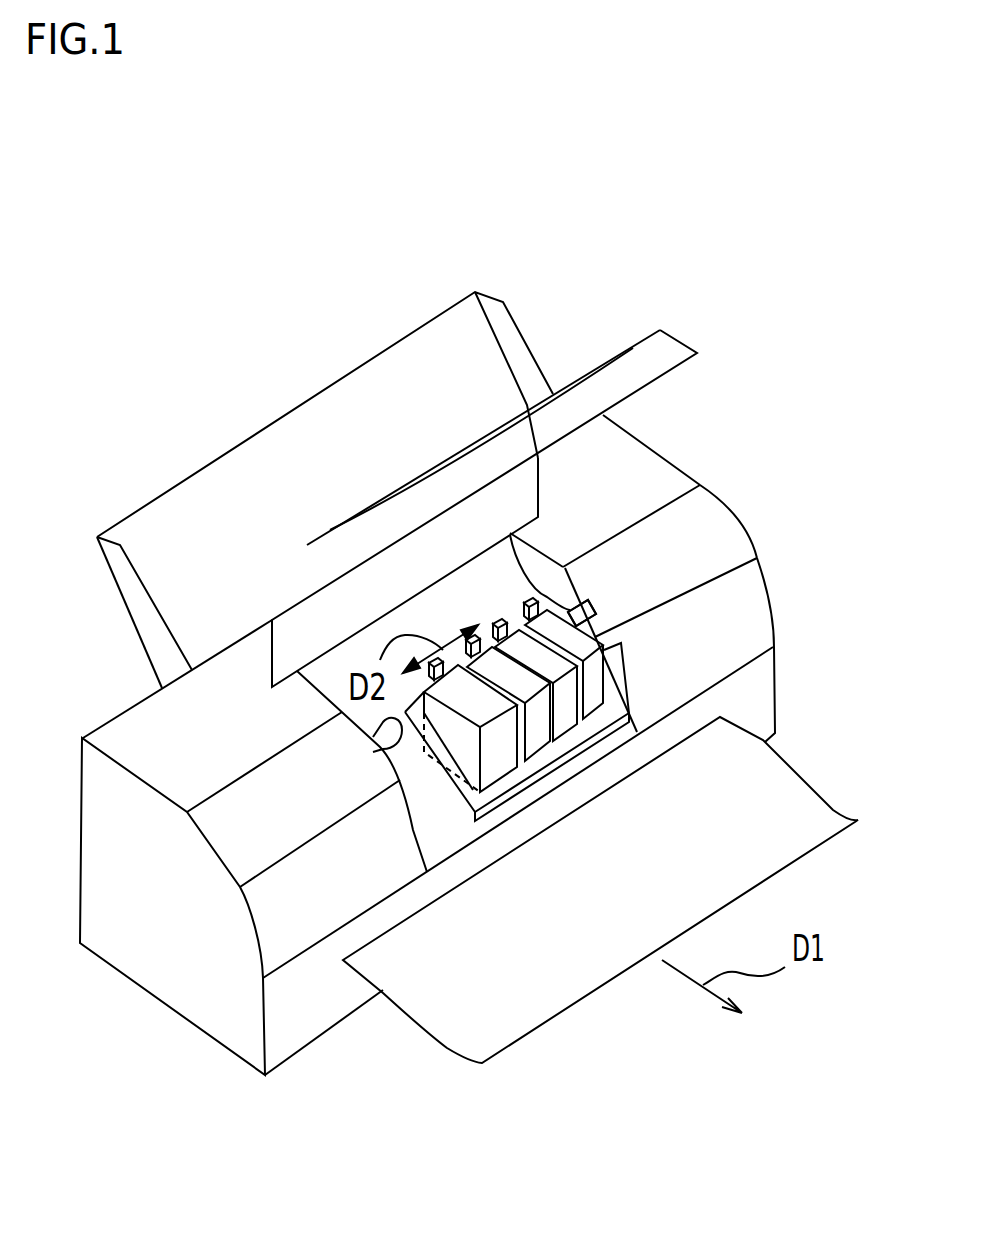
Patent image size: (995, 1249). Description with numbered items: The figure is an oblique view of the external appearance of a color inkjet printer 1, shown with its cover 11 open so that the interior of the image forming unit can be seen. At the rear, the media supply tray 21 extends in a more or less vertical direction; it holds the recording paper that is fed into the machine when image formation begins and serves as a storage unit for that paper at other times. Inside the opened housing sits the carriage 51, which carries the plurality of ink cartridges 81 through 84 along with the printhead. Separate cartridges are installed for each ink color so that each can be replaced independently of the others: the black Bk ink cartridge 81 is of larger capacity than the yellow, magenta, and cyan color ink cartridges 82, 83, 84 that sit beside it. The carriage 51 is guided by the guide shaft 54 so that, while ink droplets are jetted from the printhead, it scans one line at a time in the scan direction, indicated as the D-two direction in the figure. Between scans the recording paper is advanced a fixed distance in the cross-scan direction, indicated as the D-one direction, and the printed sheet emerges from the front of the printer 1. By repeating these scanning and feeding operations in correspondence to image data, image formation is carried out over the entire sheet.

The color inkjet printer 1 is at (101, 301).
The cover 11 is at (627, 382).
The media supply tray 21 is at (287, 413).
The carriage 51 is at (622, 716).
The guide shaft 54 is at (590, 611).
The Bk ink cartridge 81 is at (496, 764).
The Y ink cartridge 82 is at (537, 743).
The M ink cartridge 83 is at (567, 727).
The C ink cartridge 84 is at (597, 670).